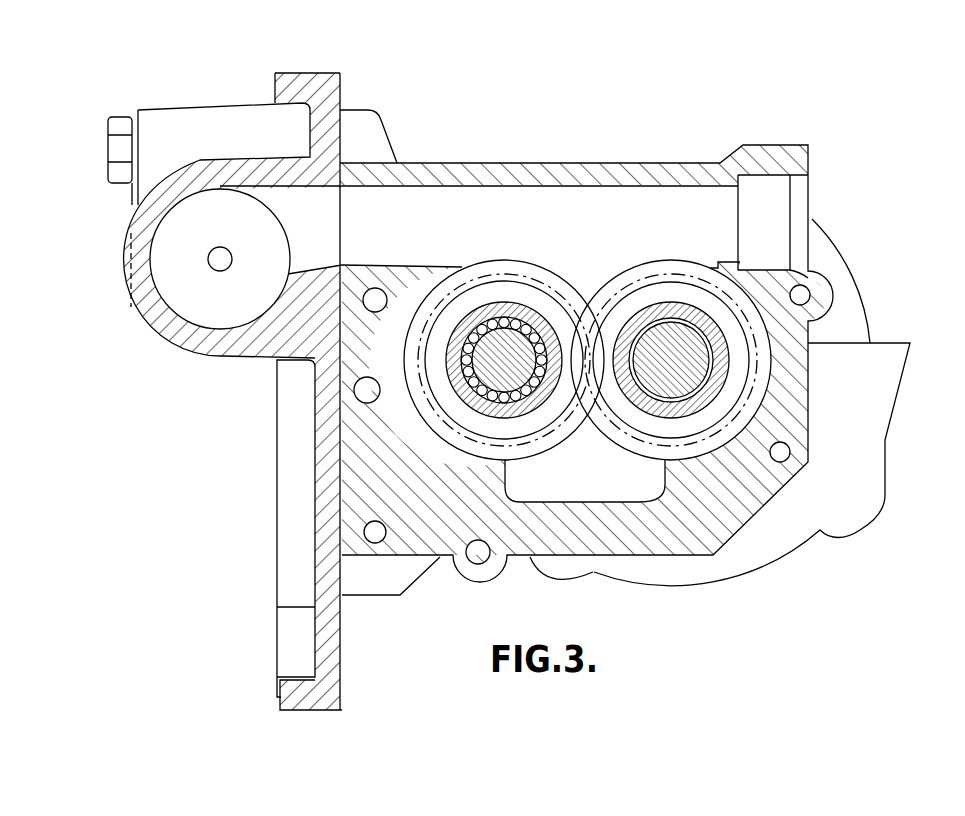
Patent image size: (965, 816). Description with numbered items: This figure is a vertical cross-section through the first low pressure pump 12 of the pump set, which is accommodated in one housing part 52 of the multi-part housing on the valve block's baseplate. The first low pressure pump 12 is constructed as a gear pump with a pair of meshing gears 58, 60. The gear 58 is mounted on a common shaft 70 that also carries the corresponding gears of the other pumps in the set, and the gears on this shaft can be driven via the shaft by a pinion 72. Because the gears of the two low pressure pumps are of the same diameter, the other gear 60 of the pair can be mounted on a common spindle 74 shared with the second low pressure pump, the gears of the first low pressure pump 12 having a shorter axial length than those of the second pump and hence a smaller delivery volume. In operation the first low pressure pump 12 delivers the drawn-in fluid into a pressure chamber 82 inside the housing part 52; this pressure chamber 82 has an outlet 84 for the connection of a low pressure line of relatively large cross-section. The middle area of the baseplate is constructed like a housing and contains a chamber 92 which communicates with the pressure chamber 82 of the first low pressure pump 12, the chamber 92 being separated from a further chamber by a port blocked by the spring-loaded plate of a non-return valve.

The first low pressure pump 12 is at (572, 126).
The housing part 52 is at (725, 530).
The gear 58 is at (667, 275).
The gear 60 is at (500, 280).
The common shaft 70 is at (660, 378).
The pinion 72 is at (827, 268).
The common spindle 74 is at (528, 393).
The pressure chamber 82 is at (586, 236).
The outlet 84 is at (795, 208).
The chamber 92 is at (296, 239).